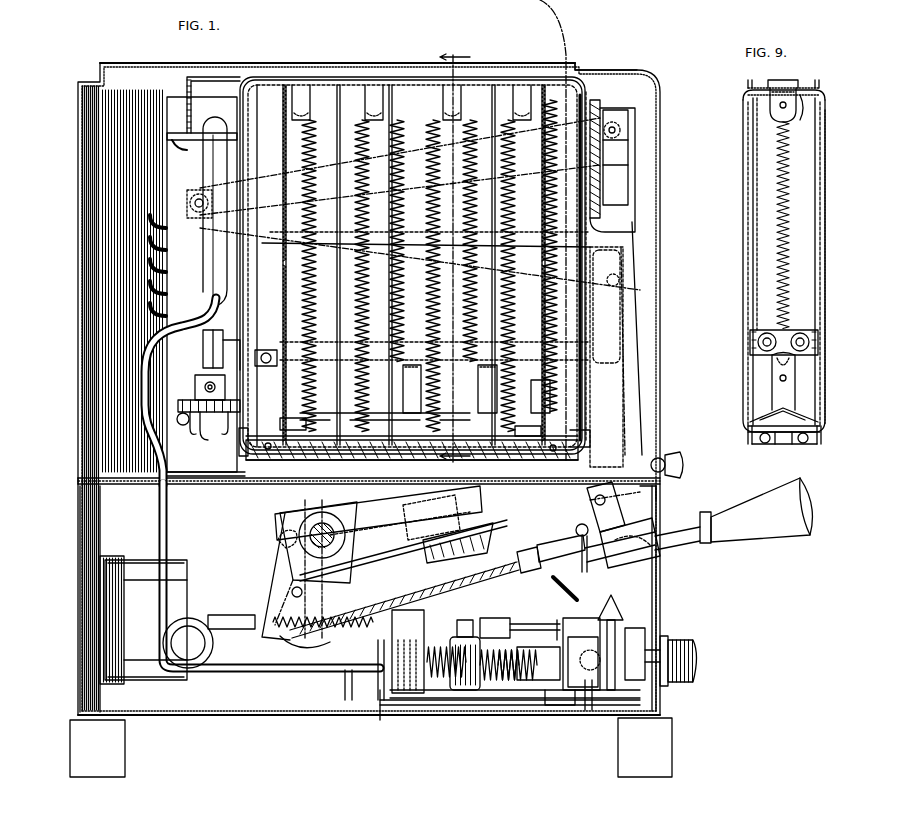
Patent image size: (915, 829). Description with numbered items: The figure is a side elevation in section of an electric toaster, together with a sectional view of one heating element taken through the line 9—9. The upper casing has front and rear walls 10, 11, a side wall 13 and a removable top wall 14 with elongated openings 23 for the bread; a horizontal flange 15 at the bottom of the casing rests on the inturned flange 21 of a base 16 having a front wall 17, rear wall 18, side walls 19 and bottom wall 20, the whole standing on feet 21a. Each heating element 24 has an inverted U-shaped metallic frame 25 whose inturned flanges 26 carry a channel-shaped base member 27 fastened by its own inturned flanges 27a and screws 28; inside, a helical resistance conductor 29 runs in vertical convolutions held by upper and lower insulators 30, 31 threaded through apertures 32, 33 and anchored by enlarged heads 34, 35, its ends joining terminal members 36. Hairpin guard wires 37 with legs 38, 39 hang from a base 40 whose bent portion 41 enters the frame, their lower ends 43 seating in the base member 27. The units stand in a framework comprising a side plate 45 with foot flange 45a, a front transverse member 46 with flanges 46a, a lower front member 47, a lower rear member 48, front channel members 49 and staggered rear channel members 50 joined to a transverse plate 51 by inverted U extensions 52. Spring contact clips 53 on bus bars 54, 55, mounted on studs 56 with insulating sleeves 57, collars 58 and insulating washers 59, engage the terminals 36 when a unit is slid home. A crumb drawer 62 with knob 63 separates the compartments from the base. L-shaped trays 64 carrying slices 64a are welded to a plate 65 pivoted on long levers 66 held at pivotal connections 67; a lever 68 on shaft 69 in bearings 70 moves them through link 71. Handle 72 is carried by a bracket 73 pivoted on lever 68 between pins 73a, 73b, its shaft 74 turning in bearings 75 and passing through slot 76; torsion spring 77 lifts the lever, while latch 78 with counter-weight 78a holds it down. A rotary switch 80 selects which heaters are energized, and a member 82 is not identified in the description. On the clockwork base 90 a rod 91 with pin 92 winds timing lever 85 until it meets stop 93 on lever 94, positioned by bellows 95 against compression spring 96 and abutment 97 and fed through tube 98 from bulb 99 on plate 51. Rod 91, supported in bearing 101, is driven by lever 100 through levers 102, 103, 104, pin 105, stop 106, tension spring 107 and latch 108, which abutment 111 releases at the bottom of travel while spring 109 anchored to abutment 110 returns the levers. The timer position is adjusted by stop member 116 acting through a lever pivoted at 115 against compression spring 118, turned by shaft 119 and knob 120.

In FIG. 1, the section line 9 is at (455, 259).
In FIG. 1, the front wall 10 is at (661, 248).
In FIG. 1, the rear wall 11 is at (80, 262).
In FIG. 1, the side wall 13 is at (100, 320).
In FIG. 1, the top wall 14 is at (140, 63).
In FIG. 1, the horizontal flange 15 is at (100, 480).
In FIG. 1, the base 16 is at (80, 562).
In FIG. 1, the front wall of base 17 is at (660, 493).
In FIG. 1, the rear wall of base 18 is at (80, 622).
In FIG. 1, the side walls of base 19 is at (275, 715).
In FIG. 1, the bottom wall 20 is at (250, 714).
In FIG. 1, the inturned flange 21 is at (90, 494).
In FIG. 1, the legs or feet 21a is at (78, 755).
In FIG. 1, the elongated openings 23 is at (577, 70).
In FIG. 1, the heating element 24 is at (390, 77).
In FIG. 9, the heating element 24 is at (742, 150).
In FIG. 1, the metallic frame 25 is at (348, 82).
In FIG. 9, the metallic frame 25 is at (820, 88).
In FIG. 1, the inturned flanges 26 is at (288, 455).
In FIG. 9, the inturned flanges 26 is at (810, 444).
In FIG. 1, the channel-shaped base member 27 is at (500, 440).
In FIG. 9, the channel-shaped base member 27 is at (812, 420).
In FIG. 1, the inturned flanges 27a is at (290, 428).
In FIG. 9, the inturned flanges 27a is at (782, 446).
In FIG. 1, the screw fastening means 28 is at (268, 450).
In FIG. 9, the screw fastening means 28 is at (763, 444).
In FIG. 1, the helical resistance conductor 29 is at (312, 290).
In FIG. 9, the helical resistance conductor 29 is at (780, 140).
In FIG. 1, the upper insulating supporting members 30 is at (305, 95).
In FIG. 9, the upper insulating supporting members 30 is at (770, 105).
In FIG. 1, the lower insulating supporting members 31 is at (290, 398).
In FIG. 9, the lower insulating supporting members 31 is at (798, 390).
In FIG. 9, the apertures 32 is at (805, 88).
In FIG. 1, the apertures 33 is at (318, 440).
In FIG. 9, the enlarged head 34 is at (756, 86).
In FIG. 9, the enlarged head 35 is at (748, 428).
In FIG. 1, the terminal members 36 is at (258, 350).
In FIG. 9, the terminal members 36 is at (757, 348).
In FIG. 1, the guard wires 37 is at (282, 108).
In FIG. 9, the guard wires 37 is at (744, 168).
In FIG. 9, the leg of guard wire 38 is at (744, 190).
In FIG. 9, the leg of guard wire 39 is at (826, 178).
In FIG. 9, the base of guard wire 40 is at (803, 124).
In FIG. 9, the upraised bent portion 41 is at (780, 88).
In FIG. 9, the lower ends of guard wires 43 is at (748, 440).
In FIG. 1, the upright metallic plate 45 is at (172, 165).
In FIG. 1, the flange 45a is at (248, 478).
In FIG. 1, the transverse metallic member 46 is at (598, 104).
In FIG. 1, the inturned flanges 46a is at (588, 95).
In FIG. 1, the metallic member 47 is at (614, 395).
In FIG. 1, the transverse metallic member 48 is at (242, 448).
In FIG. 1, the channel members 49 is at (592, 434).
In FIG. 1, the channel members 50 is at (250, 292).
In FIG. 1, the metallic plate 51 is at (195, 112).
In FIG. 1, the extensions 52 is at (200, 77).
In FIG. 1, the spring contact clips 53 is at (203, 345).
In FIG. 1, the bus bar 54 is at (196, 380).
In FIG. 1, the bus bar 55 is at (222, 360).
In FIG. 1, the studs 56 is at (178, 422).
In FIG. 1, the insulating sleeves 57 is at (180, 400).
In FIG. 1, the collars 58 is at (190, 434).
In FIG. 1, the insulating washers 59 is at (204, 442).
In FIG. 1, the drawer 62 is at (662, 458).
In FIG. 1, the knob 63 is at (688, 470).
In FIG. 1, the tray 64 is at (418, 243).
In FIG. 1, the slice of bread 64a is at (568, 16).
In FIG. 1, the transverse metallic supporting plate 65 is at (620, 180).
In FIG. 1, the levers 66 is at (410, 151).
In FIG. 1, the pivotal connections 67 is at (190, 203).
In FIG. 1, the lever 68 is at (568, 524).
In FIG. 1, the shaft 69 is at (300, 540).
In FIG. 1, the bearings 70 is at (292, 683).
In FIG. 1, the link 71 is at (638, 332).
In FIG. 1, the operating handle 72 is at (812, 496).
In FIG. 1, the bracket 73 is at (608, 555).
In FIG. 1, the pin 73a is at (578, 532).
In FIG. 1, the pin 73b is at (612, 500).
In FIG. 1, the shaft or pin 74 is at (620, 560).
In FIG. 1, the bearings 75 is at (680, 553).
In FIG. 1, the slot 76 is at (660, 576).
In FIG. 1, the torsion spring 77 is at (300, 530).
In FIG. 1, the latch 78 is at (620, 608).
In FIG. 1, the counter-weight 78a is at (558, 706).
In FIG. 1, the multiple position switch 80 is at (168, 680).
In FIG. 1, the cable 82 is at (452, 584).
In FIG. 1, the winding lever 85 is at (536, 624).
In FIG. 1, the base 90 is at (536, 710).
In FIG. 1, the rod 91 is at (372, 700).
In FIG. 1, the upright pin 92 is at (566, 618).
In FIG. 1, the stop 93 is at (492, 618).
In FIG. 1, the lever 94 is at (462, 620).
In FIG. 1, the metallic bellows 95 is at (436, 648).
In FIG. 1, the compression spring 96 is at (492, 686).
In FIG. 1, the abutment 97 is at (520, 664).
In FIG. 1, the tubular member 98 is at (160, 538).
In FIG. 1, the bulb 99 is at (205, 250).
In FIG. 1, the lever 100 is at (352, 590).
In FIG. 1, the bearing 101 is at (590, 712).
In FIG. 1, the lever 102 is at (278, 580).
In FIG. 1, the lever 103 is at (440, 520).
In FIG. 1, the lever 104 is at (484, 494).
In FIG. 1, the pin 105 is at (285, 514).
In FIG. 1, the stop 106 is at (292, 592).
In FIG. 1, the tension spring 107 is at (285, 648).
In FIG. 1, the latch 108 is at (495, 530).
In FIG. 1, the tension spring 109 is at (270, 615).
In FIG. 1, the fixed abutment 110 is at (392, 646).
In FIG. 1, the abutment 111 is at (408, 620).
In FIG. 1, the pivot 115 is at (578, 637).
In FIG. 1, the mechanical stop member 116 is at (583, 653).
In FIG. 1, the compression spring 118 is at (340, 700).
In FIG. 1, the pin or shaft 119 is at (645, 646).
In FIG. 1, the operating knob 120 is at (690, 684).